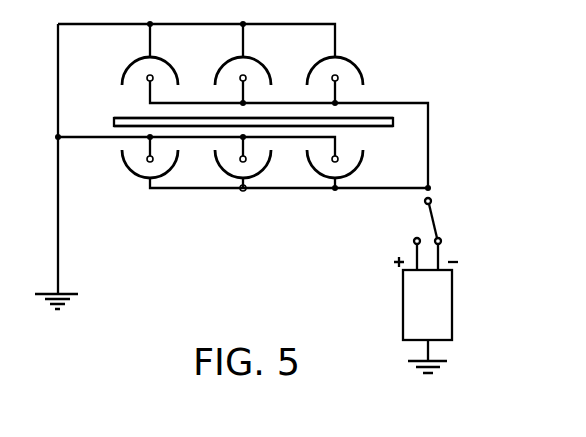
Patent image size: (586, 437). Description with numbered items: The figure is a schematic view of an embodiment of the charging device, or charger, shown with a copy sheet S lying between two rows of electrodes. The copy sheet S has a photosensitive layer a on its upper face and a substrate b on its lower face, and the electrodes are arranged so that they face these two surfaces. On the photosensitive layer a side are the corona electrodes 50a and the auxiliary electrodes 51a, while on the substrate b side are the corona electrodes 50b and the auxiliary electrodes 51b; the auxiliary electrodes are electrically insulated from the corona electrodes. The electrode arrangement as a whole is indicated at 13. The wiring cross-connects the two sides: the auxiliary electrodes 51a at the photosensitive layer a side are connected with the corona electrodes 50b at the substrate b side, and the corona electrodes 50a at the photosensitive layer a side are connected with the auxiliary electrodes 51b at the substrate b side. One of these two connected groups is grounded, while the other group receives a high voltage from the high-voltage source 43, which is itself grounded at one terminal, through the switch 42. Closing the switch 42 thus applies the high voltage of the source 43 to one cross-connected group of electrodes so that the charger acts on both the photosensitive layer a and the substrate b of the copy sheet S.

The electrode array 13 is at (365, 52).
The auxiliary electrode 51a is at (164, 60).
The corona electrode 50a is at (148, 80).
The auxiliary electrode 51b is at (144, 179).
The corona electrode 50b is at (147, 161).
The copy sheet S is at (394, 122).
The photosensitive layer a is at (376, 118).
The substrate b is at (377, 128).
The switch 42 is at (436, 222).
The high-voltage source 43 is at (452, 306).